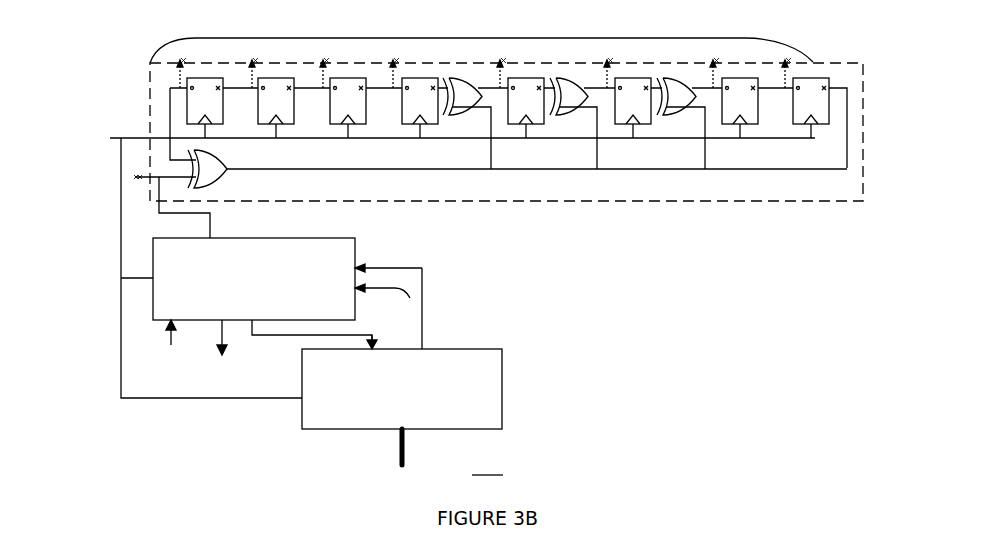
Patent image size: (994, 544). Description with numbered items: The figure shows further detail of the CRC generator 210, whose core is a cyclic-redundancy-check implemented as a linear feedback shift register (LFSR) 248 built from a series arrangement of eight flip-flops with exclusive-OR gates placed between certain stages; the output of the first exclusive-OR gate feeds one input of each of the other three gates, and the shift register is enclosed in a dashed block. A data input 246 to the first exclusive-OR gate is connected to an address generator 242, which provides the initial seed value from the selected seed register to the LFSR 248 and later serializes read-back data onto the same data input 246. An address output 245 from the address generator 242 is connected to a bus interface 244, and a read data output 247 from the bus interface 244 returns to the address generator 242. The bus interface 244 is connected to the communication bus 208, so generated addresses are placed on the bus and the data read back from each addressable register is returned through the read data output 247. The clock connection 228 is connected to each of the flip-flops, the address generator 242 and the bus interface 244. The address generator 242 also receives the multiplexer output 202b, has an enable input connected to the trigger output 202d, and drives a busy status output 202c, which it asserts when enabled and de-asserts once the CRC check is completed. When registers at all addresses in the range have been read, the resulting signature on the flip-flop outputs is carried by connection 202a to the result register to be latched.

The signature output connection 202a is at (482, 38).
The multiplexer output 202b is at (325, 335).
The busy status output 202c is at (220, 338).
The trigger output 202d is at (172, 332).
The communication bus 208 is at (397, 452).
The CRC generator 210 is at (487, 467).
The clock connection 228 is at (120, 136).
The address generator 242 is at (357, 247).
The bus interface 244 is at (502, 388).
The address output 245 is at (386, 341).
The data input 246 is at (212, 222).
The read data output 247 is at (422, 322).
The linear feedback shift register 248 is at (688, 202).